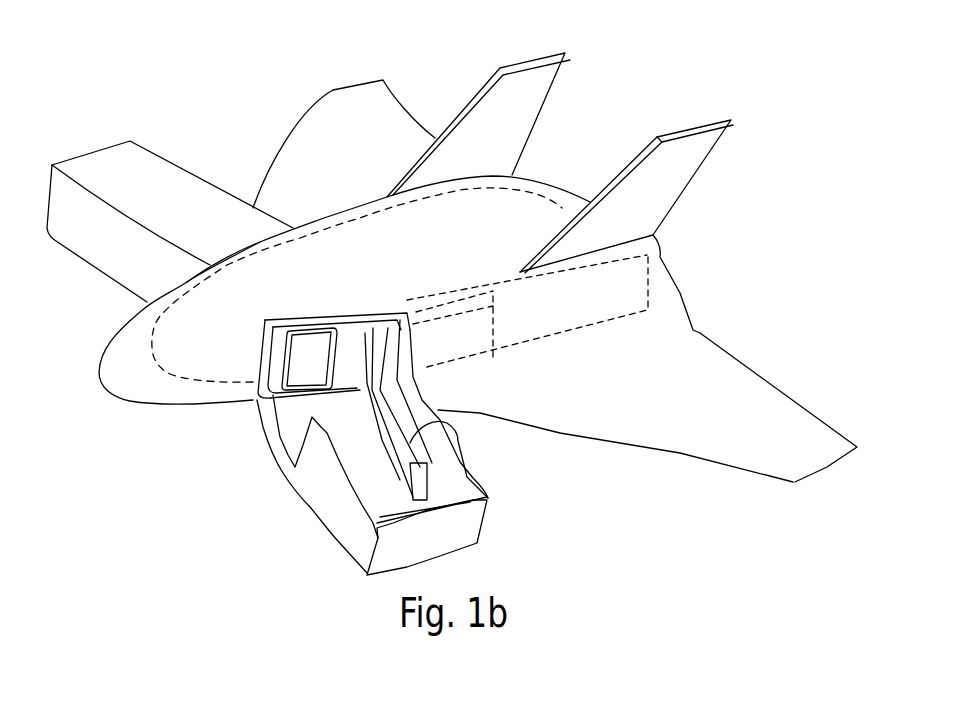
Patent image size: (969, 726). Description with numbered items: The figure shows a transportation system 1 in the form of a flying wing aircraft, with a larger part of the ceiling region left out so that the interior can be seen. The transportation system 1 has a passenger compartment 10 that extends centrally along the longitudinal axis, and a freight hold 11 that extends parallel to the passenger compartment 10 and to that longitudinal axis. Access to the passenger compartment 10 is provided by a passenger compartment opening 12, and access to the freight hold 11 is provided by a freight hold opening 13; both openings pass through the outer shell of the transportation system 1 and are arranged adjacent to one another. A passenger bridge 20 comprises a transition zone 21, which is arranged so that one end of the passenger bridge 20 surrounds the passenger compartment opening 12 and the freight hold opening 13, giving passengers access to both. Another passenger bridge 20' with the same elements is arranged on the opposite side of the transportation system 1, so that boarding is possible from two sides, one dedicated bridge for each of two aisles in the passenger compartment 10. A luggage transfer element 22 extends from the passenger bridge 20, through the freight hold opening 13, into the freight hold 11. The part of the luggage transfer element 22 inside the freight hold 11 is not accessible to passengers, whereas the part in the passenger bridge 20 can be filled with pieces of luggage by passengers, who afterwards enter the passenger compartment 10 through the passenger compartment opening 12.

The transportation system 1 is at (560, 186).
The passenger compartment 10 is at (155, 358).
The freight hold 11 is at (662, 253).
The passenger compartment opening 12 is at (312, 327).
The freight hold opening 13 is at (387, 324).
The passenger bridge 20 is at (416, 485).
The passenger bridge 20' is at (241, 191).
The transition zone 21 is at (270, 390).
The luggage transfer element 22 is at (478, 465).